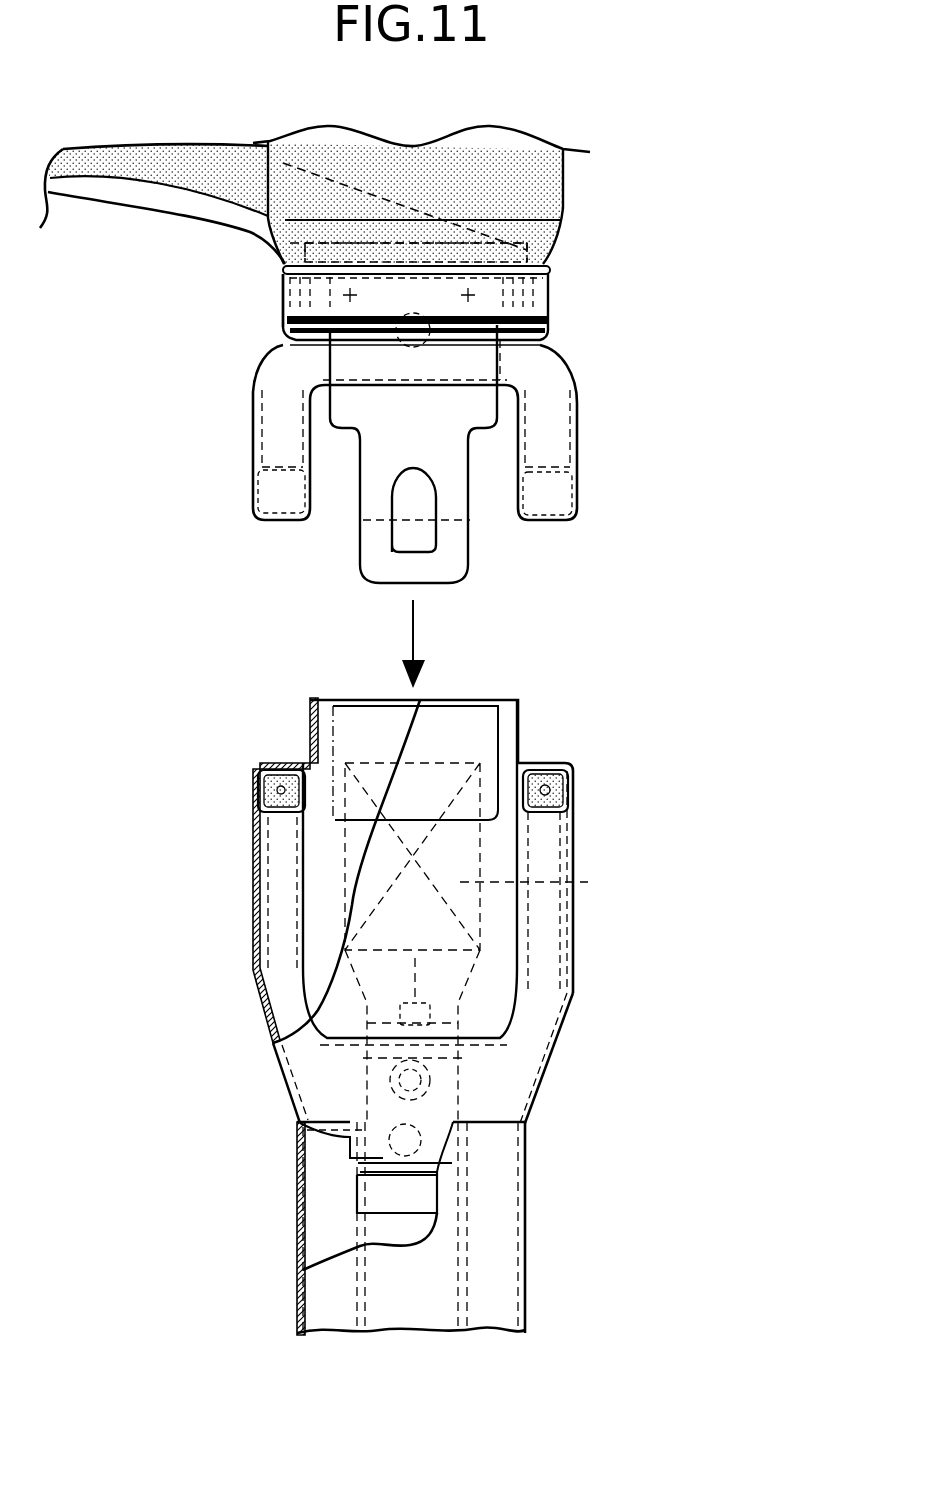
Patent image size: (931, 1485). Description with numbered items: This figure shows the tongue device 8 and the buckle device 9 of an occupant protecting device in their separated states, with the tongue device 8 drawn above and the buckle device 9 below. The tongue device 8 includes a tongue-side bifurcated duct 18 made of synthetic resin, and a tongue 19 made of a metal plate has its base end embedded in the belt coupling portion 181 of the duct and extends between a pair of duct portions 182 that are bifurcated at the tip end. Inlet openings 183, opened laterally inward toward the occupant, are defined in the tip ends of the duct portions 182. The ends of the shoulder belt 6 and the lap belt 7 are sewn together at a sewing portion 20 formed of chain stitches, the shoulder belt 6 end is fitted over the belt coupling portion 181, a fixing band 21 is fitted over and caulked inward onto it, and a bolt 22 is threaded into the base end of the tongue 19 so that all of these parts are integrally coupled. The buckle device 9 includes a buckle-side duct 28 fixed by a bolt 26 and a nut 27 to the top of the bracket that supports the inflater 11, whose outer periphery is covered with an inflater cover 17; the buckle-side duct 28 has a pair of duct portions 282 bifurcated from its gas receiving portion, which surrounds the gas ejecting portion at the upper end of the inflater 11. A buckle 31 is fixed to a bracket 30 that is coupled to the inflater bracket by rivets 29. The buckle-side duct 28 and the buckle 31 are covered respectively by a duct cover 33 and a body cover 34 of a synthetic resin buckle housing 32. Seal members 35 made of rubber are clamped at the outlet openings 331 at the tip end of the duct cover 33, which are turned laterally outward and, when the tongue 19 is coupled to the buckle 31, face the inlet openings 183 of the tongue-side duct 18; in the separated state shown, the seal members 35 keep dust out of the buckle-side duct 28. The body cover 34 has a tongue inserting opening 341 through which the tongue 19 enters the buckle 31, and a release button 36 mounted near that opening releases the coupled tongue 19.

The shoulder belt 6 is at (562, 201).
The lap belt 7 is at (77, 197).
The tongue device 8 is at (225, 372).
The buckle device 9 is at (237, 887).
The inflater 11 is at (353, 1197).
The inflater cover 17 is at (298, 1250).
The tongue-side bifurcated duct 18 is at (414, 371).
The belt coupling portion 181 is at (437, 256).
The duct portions 182 is at (627, 447).
The inlet openings 183 is at (586, 553).
The tongue 19 is at (378, 445).
The sewing portion 20 is at (520, 313).
The fixing band 21 is at (283, 290).
The bolt 22 is at (428, 349).
The bolt 26 is at (412, 1017).
The nut 27 is at (358, 1015).
The buckle-side duct 28 is at (310, 826).
The duct portions 282 is at (287, 873).
The rivets 29 is at (393, 1077).
The bracket 30 is at (411, 1108).
The buckle 31 is at (546, 881).
The buckle housing 32 is at (574, 1024).
The duct cover 33 is at (248, 976).
The outlet openings 331 is at (583, 740).
The body cover 34 is at (446, 839).
The tongue inserting opening 341 is at (350, 700).
The seal members 35 is at (260, 783).
The release button 36 is at (457, 717).